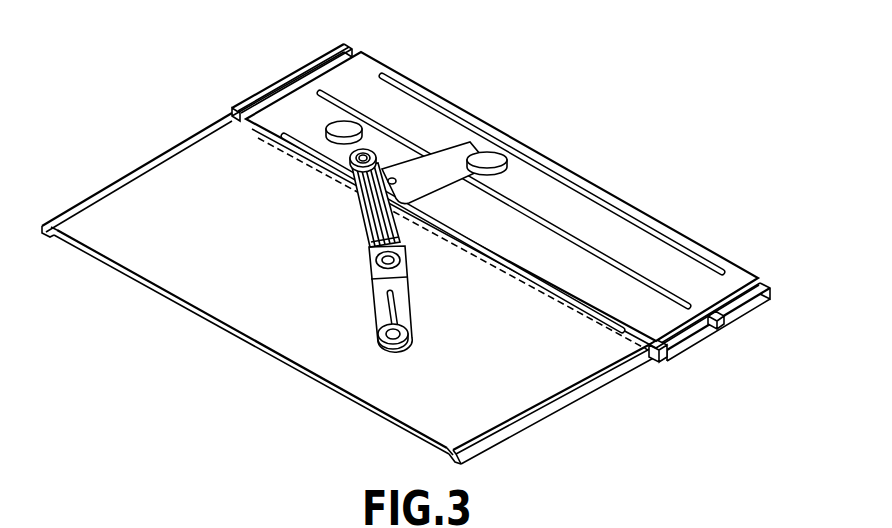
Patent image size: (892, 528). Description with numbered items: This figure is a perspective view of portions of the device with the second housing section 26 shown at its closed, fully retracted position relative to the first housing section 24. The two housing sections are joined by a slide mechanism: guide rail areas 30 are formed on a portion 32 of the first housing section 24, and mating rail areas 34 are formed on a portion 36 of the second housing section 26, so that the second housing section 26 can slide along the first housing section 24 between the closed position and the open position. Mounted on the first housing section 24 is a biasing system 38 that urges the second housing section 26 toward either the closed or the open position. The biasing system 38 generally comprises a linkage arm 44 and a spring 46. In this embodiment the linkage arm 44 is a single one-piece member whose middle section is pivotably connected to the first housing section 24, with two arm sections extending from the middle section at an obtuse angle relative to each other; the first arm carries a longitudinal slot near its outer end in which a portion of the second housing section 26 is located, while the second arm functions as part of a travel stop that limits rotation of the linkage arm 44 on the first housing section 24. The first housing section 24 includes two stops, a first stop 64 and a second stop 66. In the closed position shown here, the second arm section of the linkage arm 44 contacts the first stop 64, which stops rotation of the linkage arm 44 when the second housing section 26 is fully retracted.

The first housing section 24 is at (760, 302).
The second housing section 26 is at (251, 345).
The guide rail areas 30 is at (506, 196).
The portion of the first housing section 32 is at (308, 62).
The mating rail areas 34 is at (73, 208).
The portion of the second housing section 36 is at (337, 394).
The biasing system 38 is at (486, 90).
The linkage arm 44 is at (413, 293).
The spring 46 is at (364, 207).
The first stop 64 is at (497, 159).
The second stop 66 is at (568, 521).